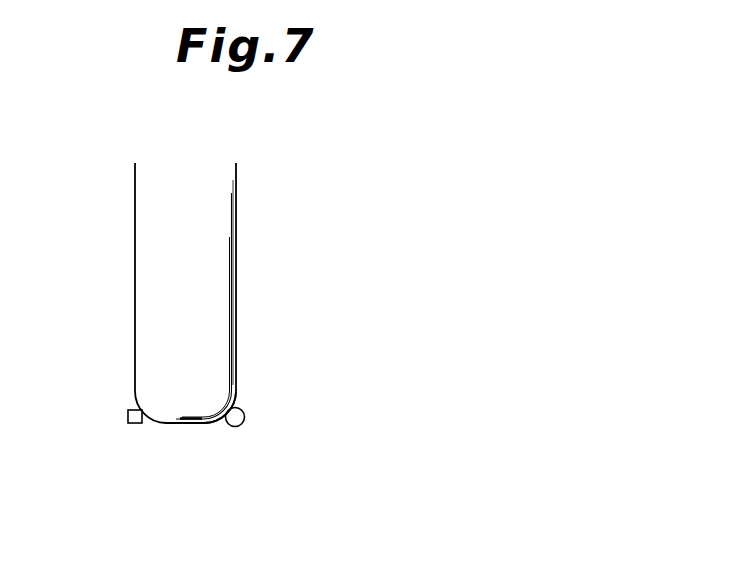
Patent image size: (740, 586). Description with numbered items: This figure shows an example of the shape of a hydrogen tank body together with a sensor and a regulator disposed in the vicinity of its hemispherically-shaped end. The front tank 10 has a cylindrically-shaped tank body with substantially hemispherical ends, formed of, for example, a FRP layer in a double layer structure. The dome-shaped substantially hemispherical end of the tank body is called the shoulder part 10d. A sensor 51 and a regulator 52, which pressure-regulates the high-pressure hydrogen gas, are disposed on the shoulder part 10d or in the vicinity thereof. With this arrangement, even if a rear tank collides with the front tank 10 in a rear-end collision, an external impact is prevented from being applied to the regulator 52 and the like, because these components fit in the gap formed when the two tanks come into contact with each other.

The front tank 10 is at (207, 307).
The shoulder part 10d is at (253, 393).
The sensor 51 is at (135, 424).
The regulator 52 is at (235, 427).